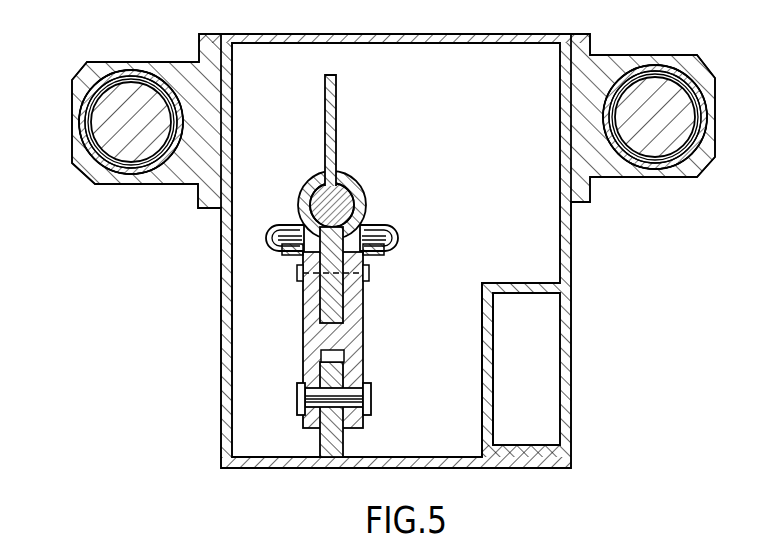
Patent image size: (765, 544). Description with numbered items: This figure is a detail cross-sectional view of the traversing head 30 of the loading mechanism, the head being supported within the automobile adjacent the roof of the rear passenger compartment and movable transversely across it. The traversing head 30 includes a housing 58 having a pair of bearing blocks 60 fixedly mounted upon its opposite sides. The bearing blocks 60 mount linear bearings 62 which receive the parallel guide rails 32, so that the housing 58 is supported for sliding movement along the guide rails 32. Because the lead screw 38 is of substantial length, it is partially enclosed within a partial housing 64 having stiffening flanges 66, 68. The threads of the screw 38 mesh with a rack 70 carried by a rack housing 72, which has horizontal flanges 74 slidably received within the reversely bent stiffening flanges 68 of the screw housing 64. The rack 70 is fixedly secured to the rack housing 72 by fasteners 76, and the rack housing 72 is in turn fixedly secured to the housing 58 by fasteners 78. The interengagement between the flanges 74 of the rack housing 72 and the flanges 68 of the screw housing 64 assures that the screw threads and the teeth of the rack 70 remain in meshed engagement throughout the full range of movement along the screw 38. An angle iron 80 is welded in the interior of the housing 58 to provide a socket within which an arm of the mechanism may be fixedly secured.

The traversing head 30 is at (200, 332).
The guide rails 32 is at (100, 127).
The lead screw 38 is at (340, 203).
The housing 58 is at (228, 424).
The bearing blocks 60 is at (170, 177).
The linear bearings 62 is at (148, 78).
The partial housing 64 is at (312, 186).
The stiffening flange 66 is at (338, 126).
The stiffening flanges 68 is at (278, 230).
The rack 70 is at (308, 258).
The rack housing 72 is at (356, 323).
The horizontal flanges 74 is at (283, 245).
The fasteners 76 is at (366, 278).
The fasteners 78 is at (372, 400).
The angle iron 80 is at (487, 388).